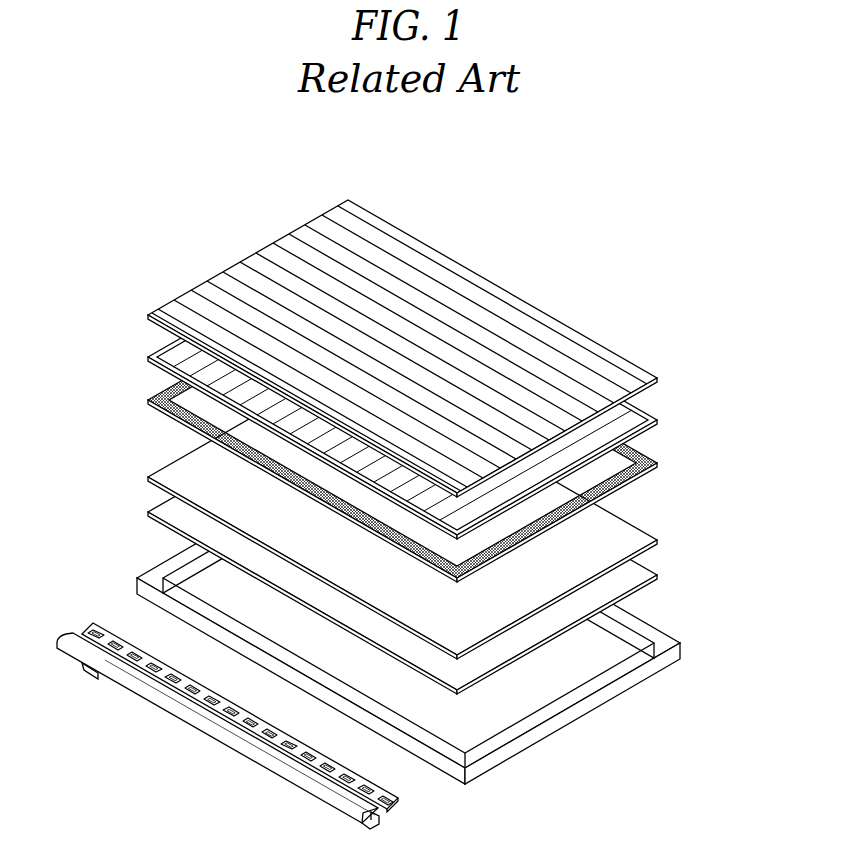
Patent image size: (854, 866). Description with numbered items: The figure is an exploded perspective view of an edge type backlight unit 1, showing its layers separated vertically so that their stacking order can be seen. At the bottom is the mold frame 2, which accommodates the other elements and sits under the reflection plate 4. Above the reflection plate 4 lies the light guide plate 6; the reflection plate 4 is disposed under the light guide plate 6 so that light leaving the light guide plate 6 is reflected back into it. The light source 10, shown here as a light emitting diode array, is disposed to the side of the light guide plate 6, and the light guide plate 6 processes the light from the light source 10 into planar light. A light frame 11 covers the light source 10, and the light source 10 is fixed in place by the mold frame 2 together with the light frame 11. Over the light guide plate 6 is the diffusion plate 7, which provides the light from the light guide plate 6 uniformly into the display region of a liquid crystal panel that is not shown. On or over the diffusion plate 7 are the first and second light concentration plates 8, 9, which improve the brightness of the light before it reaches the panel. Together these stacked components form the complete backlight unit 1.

The backlight unit 1 is at (554, 166).
The mold frame 2 is at (682, 652).
The reflection plate 4 is at (655, 582).
The light guide plate 6 is at (650, 526).
The diffusion plate 7 is at (658, 457).
The first light concentration plate 8 is at (652, 412).
The second light concentration plate 9 is at (640, 362).
The light source 10 is at (397, 803).
The light frame 11 is at (372, 824).